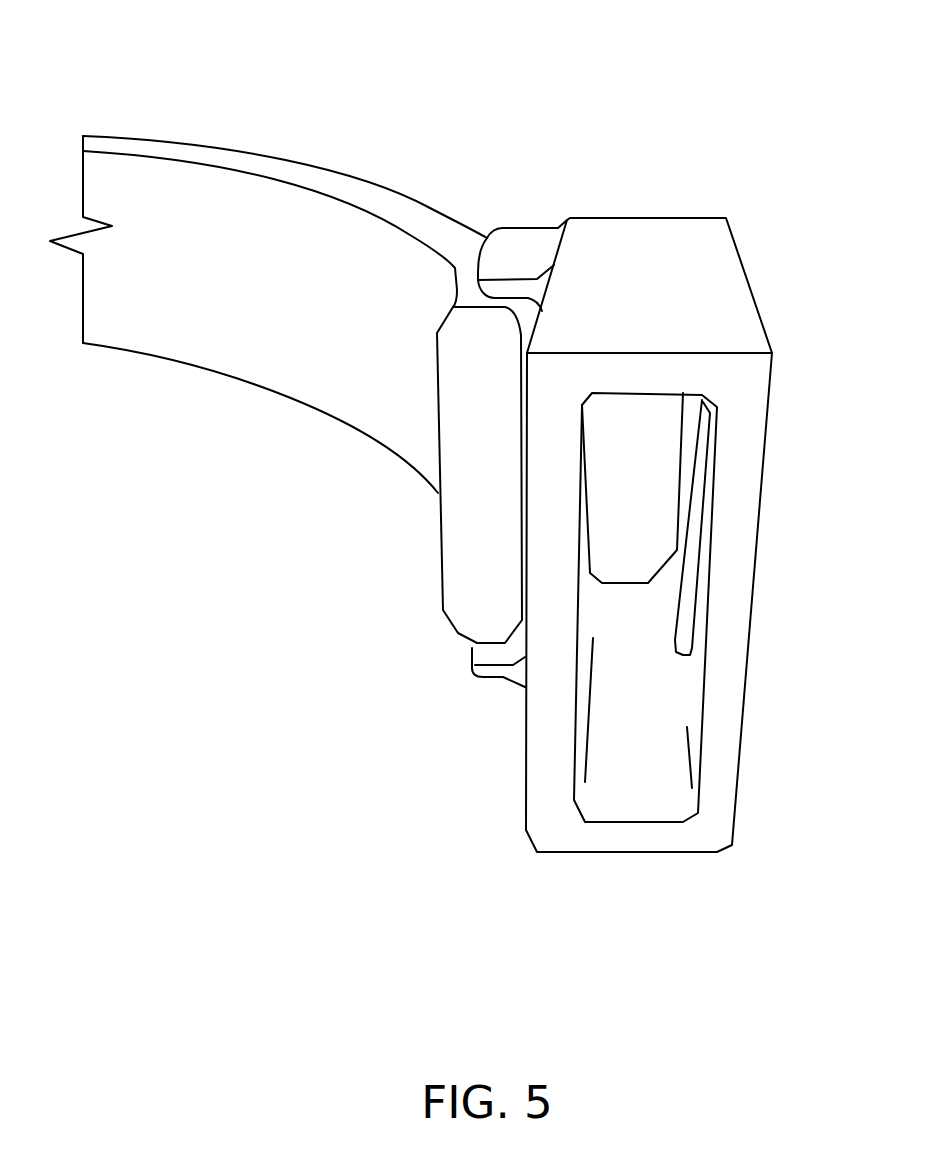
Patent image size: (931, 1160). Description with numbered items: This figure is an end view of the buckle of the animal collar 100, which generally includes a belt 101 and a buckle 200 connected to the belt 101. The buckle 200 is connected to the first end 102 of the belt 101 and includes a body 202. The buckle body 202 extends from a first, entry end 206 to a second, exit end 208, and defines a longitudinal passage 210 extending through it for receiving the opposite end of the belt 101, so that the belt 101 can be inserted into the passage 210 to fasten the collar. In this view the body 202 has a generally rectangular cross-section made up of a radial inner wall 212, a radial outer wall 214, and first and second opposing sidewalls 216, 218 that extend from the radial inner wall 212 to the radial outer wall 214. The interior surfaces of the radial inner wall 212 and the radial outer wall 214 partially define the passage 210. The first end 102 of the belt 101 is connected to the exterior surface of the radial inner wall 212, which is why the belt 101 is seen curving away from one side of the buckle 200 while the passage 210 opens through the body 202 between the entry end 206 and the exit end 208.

The animal collar 100 is at (744, 82).
The belt 101 is at (133, 353).
The first end 102 is at (440, 540).
The buckle 200 is at (772, 631).
The body 202 is at (733, 828).
The entry end 206 is at (565, 855).
The exit end 208 is at (657, 218).
The longitudinal passage 210 is at (617, 550).
The radial inner wall 212 is at (527, 715).
The radial outer wall 214 is at (719, 727).
The first sidewall 216 is at (668, 318).
The second sidewall 218 is at (673, 855).